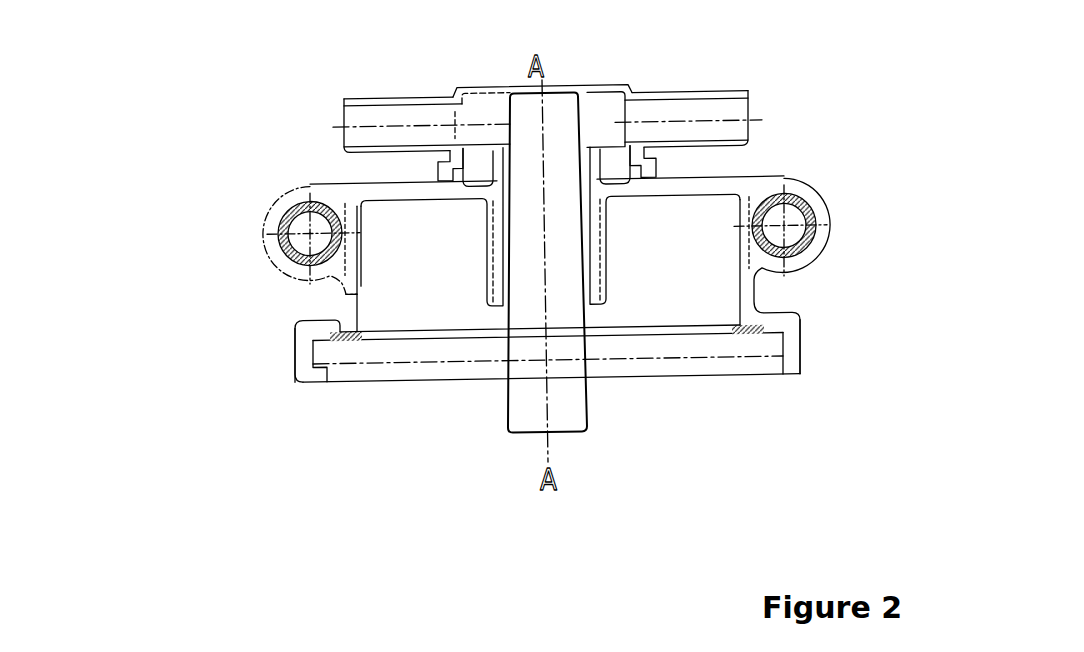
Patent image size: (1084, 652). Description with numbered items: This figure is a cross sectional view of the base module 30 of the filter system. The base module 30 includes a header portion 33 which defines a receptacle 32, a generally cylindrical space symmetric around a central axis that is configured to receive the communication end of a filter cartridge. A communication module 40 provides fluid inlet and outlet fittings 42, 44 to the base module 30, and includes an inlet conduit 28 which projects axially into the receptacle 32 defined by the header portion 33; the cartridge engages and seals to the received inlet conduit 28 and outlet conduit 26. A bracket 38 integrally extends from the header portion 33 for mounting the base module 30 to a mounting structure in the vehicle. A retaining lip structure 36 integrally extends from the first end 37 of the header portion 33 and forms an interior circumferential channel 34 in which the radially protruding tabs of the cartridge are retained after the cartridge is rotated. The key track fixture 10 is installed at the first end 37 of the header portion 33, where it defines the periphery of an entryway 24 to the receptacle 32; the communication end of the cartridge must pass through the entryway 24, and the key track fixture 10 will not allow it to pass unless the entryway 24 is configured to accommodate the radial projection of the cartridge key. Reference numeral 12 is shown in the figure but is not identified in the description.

The key track fixture 10 is at (768, 327).
The mounting plate step 12 is at (733, 330).
The entryway 24 is at (430, 303).
The outlet conduit 26 is at (607, 262).
The inlet conduit 28 is at (593, 415).
The base module 30 is at (753, 175).
The receptacle 32 is at (383, 292).
The header portion 33 is at (337, 293).
The interior circumferential channel 34 is at (330, 351).
The retaining lip 36 is at (313, 388).
The first end 37 is at (805, 313).
The bracket 38 is at (268, 222).
The communication module 40 is at (456, 94).
The fluid inlet fitting 42 is at (342, 98).
The fluid outlet fitting 44 is at (743, 93).